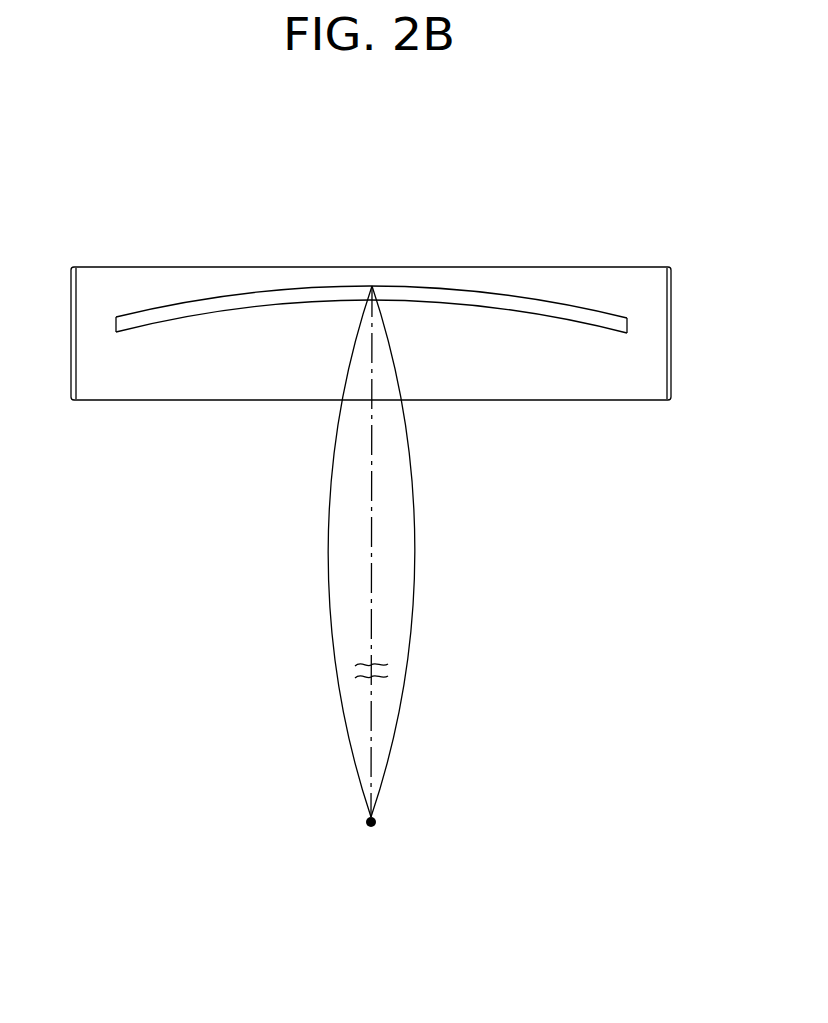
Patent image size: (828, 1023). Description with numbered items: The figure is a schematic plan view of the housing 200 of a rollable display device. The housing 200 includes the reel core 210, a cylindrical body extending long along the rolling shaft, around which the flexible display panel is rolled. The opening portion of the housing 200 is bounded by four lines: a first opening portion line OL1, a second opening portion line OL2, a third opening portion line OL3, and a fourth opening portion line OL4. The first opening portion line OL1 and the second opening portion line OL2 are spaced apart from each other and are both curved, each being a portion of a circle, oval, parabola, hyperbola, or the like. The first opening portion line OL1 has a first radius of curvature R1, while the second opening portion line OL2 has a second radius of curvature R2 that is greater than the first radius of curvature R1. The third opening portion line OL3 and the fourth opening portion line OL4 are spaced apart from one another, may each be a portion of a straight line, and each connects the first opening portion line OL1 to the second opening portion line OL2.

The housing 200 is at (559, 190).
The reel core 210 is at (263, 293).
The first opening portion line OL1 is at (472, 305).
The second opening portion line OL2 is at (417, 289).
The third opening portion line OL3 is at (118, 321).
The fourth opening portion line OL4 is at (621, 323).
The first radius of curvature R1 is at (402, 551).
The second radius of curvature R2 is at (342, 551).